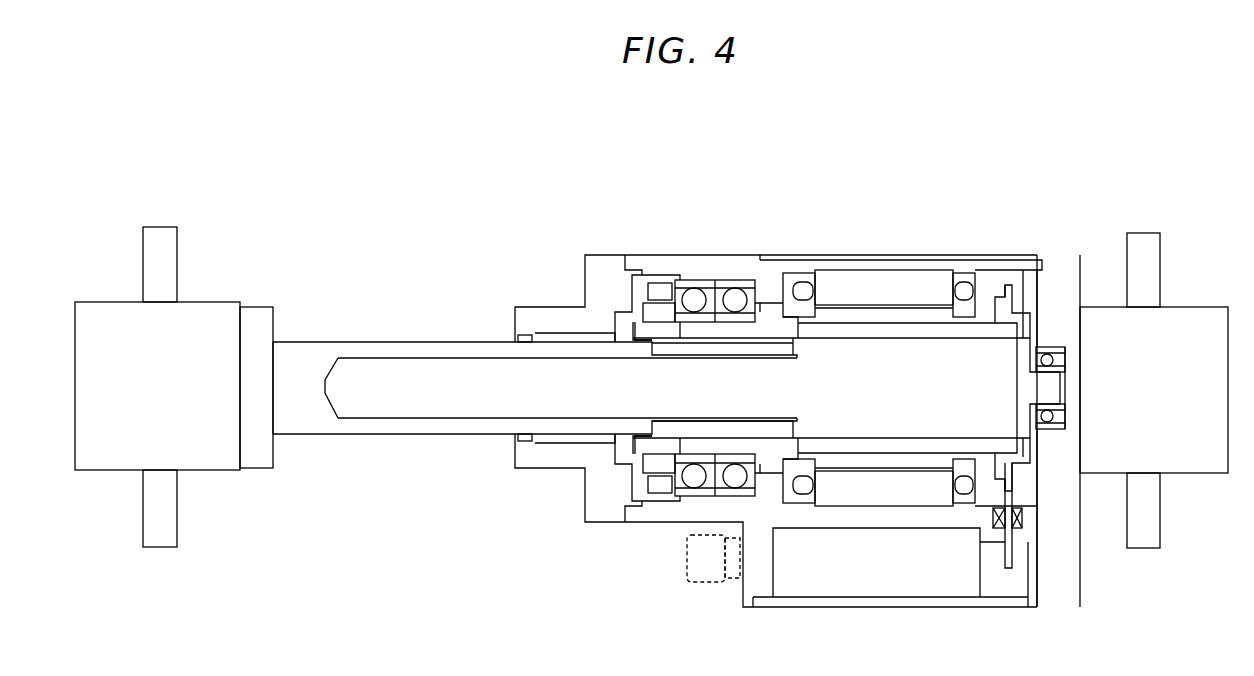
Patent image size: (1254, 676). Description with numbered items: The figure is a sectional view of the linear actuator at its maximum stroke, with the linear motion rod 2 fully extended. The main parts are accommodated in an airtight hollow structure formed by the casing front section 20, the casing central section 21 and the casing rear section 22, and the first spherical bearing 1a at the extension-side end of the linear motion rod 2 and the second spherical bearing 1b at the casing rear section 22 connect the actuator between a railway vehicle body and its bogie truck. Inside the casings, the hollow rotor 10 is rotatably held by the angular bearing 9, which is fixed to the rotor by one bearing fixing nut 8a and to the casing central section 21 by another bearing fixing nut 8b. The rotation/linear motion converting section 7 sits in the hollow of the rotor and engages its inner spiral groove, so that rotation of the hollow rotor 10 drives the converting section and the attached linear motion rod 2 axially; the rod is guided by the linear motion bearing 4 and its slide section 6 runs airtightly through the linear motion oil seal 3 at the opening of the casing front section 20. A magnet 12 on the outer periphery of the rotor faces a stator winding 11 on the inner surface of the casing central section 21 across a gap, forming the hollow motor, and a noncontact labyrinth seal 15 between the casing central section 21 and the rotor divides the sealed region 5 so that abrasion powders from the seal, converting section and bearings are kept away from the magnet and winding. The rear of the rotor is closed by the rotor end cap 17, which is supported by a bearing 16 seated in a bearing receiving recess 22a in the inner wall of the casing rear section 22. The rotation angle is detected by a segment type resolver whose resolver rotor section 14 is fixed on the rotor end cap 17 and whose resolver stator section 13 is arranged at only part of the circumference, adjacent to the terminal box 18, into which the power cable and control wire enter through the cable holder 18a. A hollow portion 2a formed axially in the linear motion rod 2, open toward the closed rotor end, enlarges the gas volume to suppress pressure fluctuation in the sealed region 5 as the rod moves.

The first spherical bearing 1a is at (142, 304).
The second spherical bearing 1b is at (1167, 302).
The linear motion rod 2 is at (418, 342).
The hollow portion 2a is at (422, 392).
The linear motion oil seal 3 is at (525, 441).
The linear motion bearing 4 is at (553, 441).
The sealed region 5 is at (1023, 293).
The slide section 6 is at (330, 342).
The rotation/linear motion converting section 7 is at (693, 432).
The bearing fixing nut 8a is at (660, 462).
The bearing fixing nut 8b is at (658, 282).
The angular bearing 9 is at (705, 288).
The hollow rotor 10 is at (928, 333).
The stator winding 11 is at (833, 285).
The magnet 12 is at (860, 313).
The resolver stator section 13 is at (1012, 530).
The resolver rotor section 14 is at (1002, 290).
The noncontact labyrinth seal 15 is at (767, 303).
The bearing 16 is at (1047, 427).
The rotor end cap 17 is at (1023, 330).
The terminal box 18 is at (810, 570).
The cable holder 18a is at (702, 563).
The casing front section 20 is at (598, 268).
The casing central section 21 is at (747, 270).
The casing rear section 22 is at (1065, 578).
The bearing receiving recess 22a is at (1065, 352).